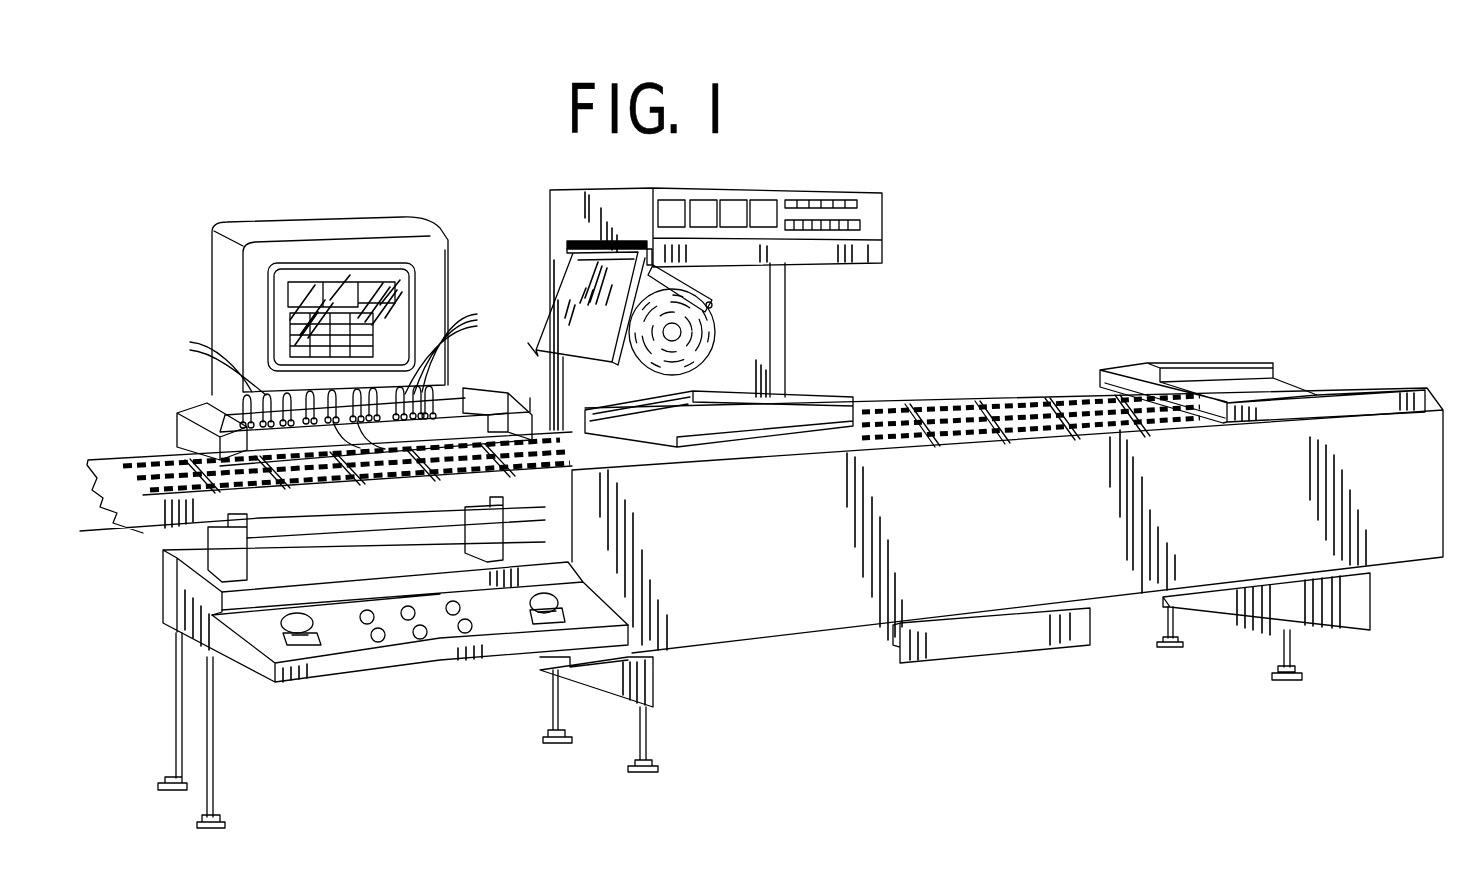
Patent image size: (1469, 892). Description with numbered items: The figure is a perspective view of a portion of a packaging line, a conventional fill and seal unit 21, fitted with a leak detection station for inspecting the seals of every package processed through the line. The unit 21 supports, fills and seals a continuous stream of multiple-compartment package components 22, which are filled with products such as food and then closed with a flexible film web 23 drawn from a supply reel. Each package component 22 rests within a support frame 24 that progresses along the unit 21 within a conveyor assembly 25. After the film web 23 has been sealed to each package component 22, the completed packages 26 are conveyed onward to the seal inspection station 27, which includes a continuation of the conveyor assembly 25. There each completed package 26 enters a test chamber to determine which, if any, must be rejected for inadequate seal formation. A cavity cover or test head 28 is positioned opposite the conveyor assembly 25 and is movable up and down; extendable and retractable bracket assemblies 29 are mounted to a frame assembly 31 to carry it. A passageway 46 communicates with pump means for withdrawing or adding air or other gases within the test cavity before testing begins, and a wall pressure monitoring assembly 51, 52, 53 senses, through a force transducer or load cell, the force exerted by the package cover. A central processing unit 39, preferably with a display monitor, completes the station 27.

The fill and seal unit 21 is at (1072, 356).
The package components 22 is at (963, 402).
The flexible film web 23 is at (695, 328).
The support frame 24 is at (1013, 400).
The conveyor assembly 25 is at (853, 405).
The completed packages 26 is at (150, 457).
The seal inspection station 27 is at (311, 257).
The test head 28 is at (448, 408).
The bracket assemblies 29 is at (200, 407).
The frame assembly 31 is at (187, 573).
The central processing unit 39 is at (227, 260).
The passageway 46 is at (290, 417).
The wall pressure monitoring assembly 51 is at (215, 363).
The wall pressure monitoring assembly 52 is at (376, 420).
The wall pressure monitoring assembly 53 is at (450, 363).